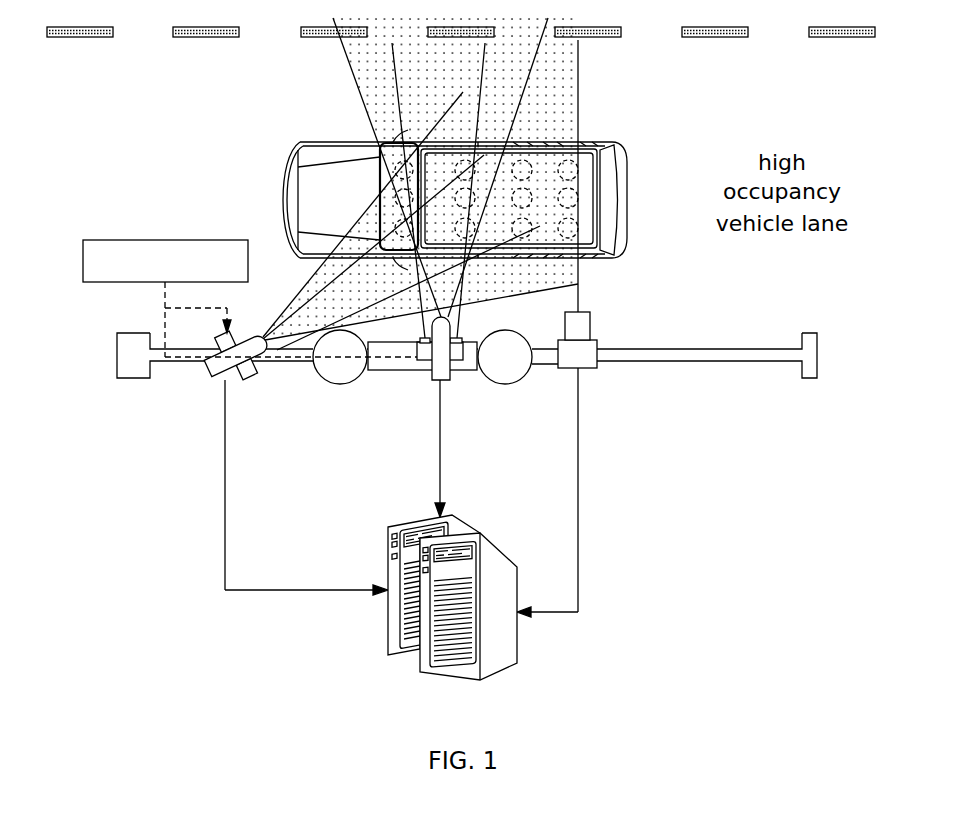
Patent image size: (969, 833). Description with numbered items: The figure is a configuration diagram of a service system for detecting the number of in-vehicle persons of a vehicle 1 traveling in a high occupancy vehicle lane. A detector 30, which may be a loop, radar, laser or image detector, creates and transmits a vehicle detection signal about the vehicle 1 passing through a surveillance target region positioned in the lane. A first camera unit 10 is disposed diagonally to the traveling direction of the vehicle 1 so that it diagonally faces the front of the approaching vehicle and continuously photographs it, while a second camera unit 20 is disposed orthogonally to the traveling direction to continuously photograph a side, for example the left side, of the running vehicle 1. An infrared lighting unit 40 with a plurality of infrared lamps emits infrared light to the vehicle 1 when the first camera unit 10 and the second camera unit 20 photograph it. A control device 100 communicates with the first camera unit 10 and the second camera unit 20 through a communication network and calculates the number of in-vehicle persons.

The vehicle 1 is at (608, 142).
The first camera unit 10 is at (209, 373).
The second camera unit 20 is at (432, 378).
The detector 30 is at (590, 368).
The infrared lighting unit 40 is at (166, 240).
The control device 100 is at (513, 645).